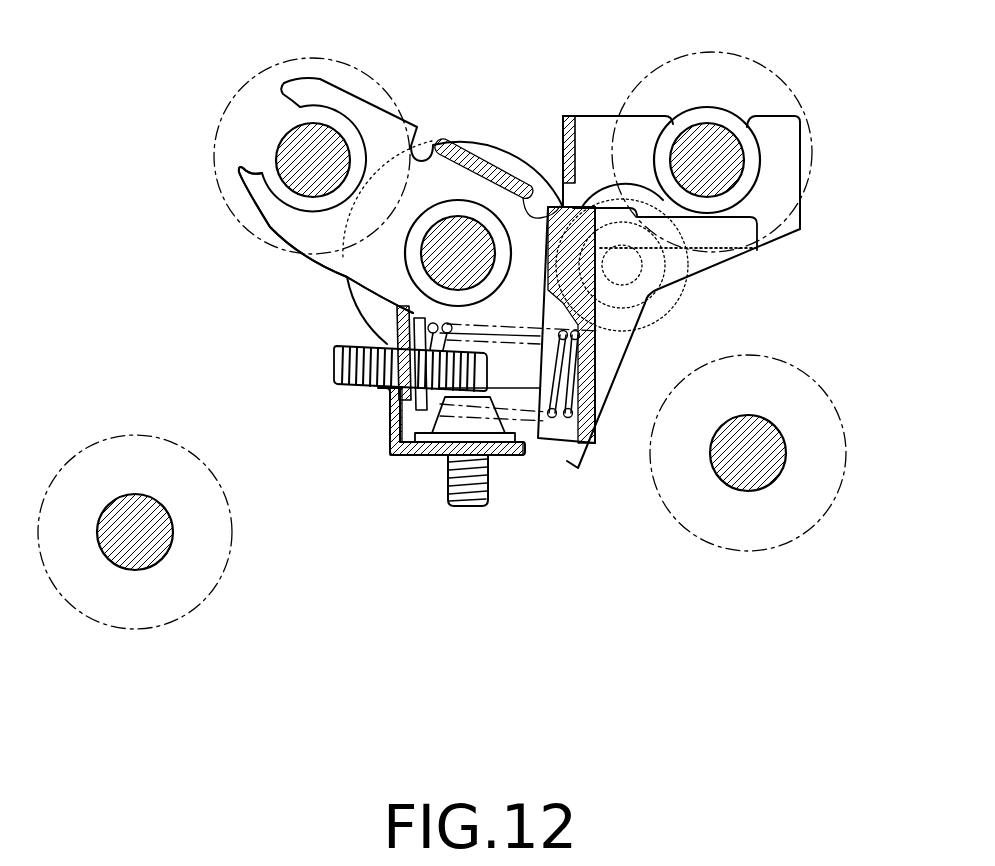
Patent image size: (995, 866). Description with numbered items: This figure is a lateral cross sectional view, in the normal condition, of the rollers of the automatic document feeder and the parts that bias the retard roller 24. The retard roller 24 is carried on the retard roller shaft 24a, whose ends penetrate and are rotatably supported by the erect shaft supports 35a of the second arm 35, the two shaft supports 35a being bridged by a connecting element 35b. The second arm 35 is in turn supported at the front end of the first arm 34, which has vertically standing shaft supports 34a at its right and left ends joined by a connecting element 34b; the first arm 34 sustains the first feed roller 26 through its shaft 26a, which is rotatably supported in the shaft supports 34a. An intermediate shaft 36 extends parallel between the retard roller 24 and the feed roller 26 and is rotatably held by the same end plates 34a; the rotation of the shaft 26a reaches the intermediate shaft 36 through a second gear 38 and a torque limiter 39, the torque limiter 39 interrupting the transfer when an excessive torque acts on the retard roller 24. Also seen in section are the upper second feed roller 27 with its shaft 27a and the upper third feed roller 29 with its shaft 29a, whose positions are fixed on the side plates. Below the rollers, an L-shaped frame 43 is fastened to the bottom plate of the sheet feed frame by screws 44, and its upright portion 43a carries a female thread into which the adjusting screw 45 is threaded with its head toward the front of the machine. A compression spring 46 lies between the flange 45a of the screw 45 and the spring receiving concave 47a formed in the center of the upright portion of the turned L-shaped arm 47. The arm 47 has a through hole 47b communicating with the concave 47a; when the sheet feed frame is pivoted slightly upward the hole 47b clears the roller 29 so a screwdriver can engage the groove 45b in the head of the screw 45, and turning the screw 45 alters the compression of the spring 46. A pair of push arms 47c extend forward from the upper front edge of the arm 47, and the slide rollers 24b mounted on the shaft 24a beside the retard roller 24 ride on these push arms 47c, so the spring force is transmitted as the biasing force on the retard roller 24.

The retard roller 24 is at (813, 127).
The retard roller shaft 24a is at (707, 140).
The slide rollers 24b is at (683, 110).
The first feed roller 26 is at (220, 190).
The shaft 26a is at (290, 147).
The second feed roller 27 is at (130, 434).
The shaft 27a is at (137, 550).
The third feed roller 29 is at (827, 396).
The shaft 29a is at (753, 480).
The first arm 34 is at (427, 112).
The shaft supports 34a is at (327, 263).
The connecting element 34b is at (460, 156).
The second arm 35 is at (634, 100).
The shaft supports 35a is at (787, 190).
The connecting element 35b is at (563, 128).
The intermediate shaft 36 is at (460, 224).
The second gear 38 is at (304, 310).
The torque limiter 39 is at (350, 302).
The L-shaped frame 43 is at (390, 440).
The upright portion 43a is at (388, 412).
The screws 44 is at (448, 493).
The screw 45 is at (337, 357).
The flange 45a is at (403, 303).
The groove 45b is at (480, 370).
The compression spring 46 is at (573, 388).
The arm 47 is at (573, 463).
The spring receiving concave 47a is at (550, 322).
The through hole 47b is at (597, 365).
The push arms 47c is at (717, 250).